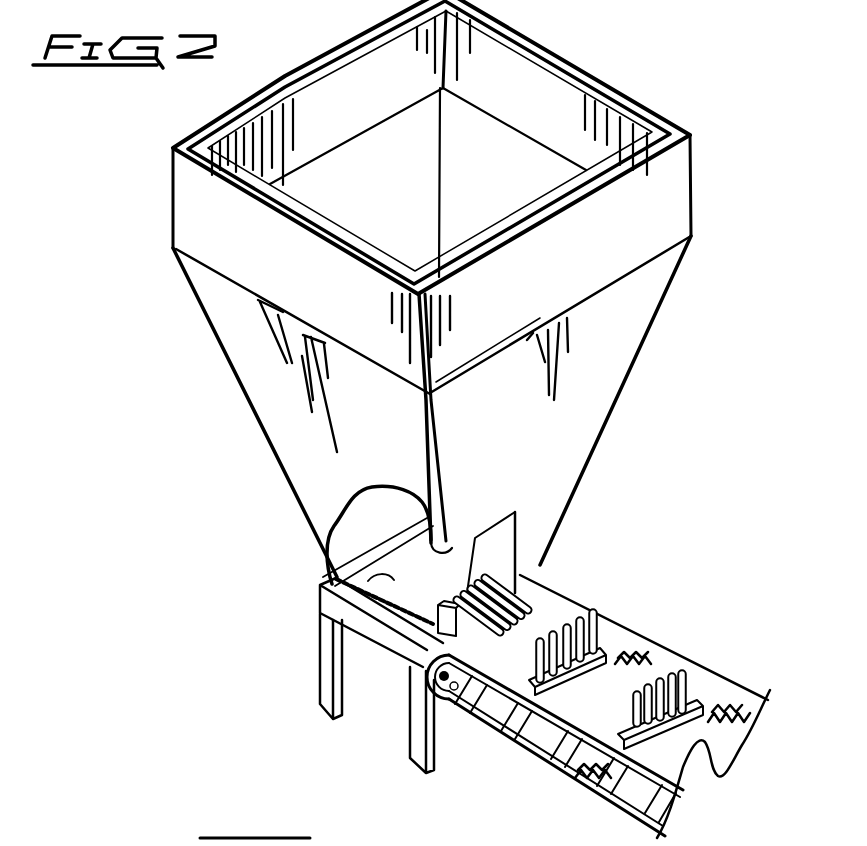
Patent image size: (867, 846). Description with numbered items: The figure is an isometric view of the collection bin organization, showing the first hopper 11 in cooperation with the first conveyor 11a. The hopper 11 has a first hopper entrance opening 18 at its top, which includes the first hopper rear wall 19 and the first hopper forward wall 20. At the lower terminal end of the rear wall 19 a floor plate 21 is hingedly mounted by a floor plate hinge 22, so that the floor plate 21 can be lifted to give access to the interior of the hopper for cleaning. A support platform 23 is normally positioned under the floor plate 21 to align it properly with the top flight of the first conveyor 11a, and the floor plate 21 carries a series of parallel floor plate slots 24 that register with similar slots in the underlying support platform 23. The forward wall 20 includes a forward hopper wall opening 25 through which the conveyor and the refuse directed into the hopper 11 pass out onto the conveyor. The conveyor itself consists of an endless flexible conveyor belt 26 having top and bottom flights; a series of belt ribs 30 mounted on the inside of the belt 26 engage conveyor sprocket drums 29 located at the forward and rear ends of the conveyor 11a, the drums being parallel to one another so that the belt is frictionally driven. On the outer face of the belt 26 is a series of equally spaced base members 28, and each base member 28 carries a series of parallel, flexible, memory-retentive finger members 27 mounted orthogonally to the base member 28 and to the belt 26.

The first hopper 11 is at (666, 114).
The first conveyor 11a is at (668, 658).
The first hopper entrance opening 18 is at (395, 82).
The first hopper rear wall 19 is at (367, 173).
The first hopper forward wall 20 is at (605, 353).
The floor plate 21 is at (320, 615).
The floor plate hinge 22 is at (337, 528).
The support platform 23 is at (320, 697).
The floor plate slots 24 is at (452, 548).
The forward hopper wall opening 25 is at (485, 590).
The endless flexible conveyor belt 26 is at (566, 597).
The finger members 27 is at (598, 618).
The base members 28 is at (560, 678).
The conveyor sprocket drums 29 is at (425, 688).
The belt ribs 30 is at (517, 720).